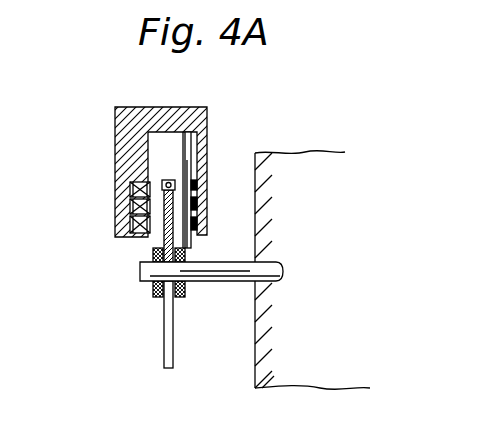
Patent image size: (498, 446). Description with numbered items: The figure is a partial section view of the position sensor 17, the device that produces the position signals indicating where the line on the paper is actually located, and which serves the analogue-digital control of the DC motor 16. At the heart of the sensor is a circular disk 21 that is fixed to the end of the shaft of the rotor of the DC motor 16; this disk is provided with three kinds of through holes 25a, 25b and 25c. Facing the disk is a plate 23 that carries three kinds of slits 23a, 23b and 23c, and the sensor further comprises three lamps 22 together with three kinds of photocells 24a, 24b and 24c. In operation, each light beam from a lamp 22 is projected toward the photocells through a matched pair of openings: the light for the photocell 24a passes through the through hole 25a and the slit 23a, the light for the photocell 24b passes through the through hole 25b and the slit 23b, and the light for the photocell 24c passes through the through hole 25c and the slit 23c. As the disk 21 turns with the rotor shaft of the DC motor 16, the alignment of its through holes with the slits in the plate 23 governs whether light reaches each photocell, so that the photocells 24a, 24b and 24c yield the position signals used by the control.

The DC motor 16 is at (338, 380).
The position sensor 17 is at (117, 167).
The circular disk 21 is at (164, 336).
The lamp 22 is at (133, 238).
The plate 23 is at (208, 170).
The slit 23a is at (198, 176).
The slit 23b is at (188, 250).
The slit 23c is at (183, 213).
The photocell 24a is at (197, 184).
The photocell 24b is at (197, 204).
The photocell 24c is at (197, 226).
The through hole 25a is at (166, 180).
The through hole 25b is at (163, 198).
The through hole 25c is at (163, 218).